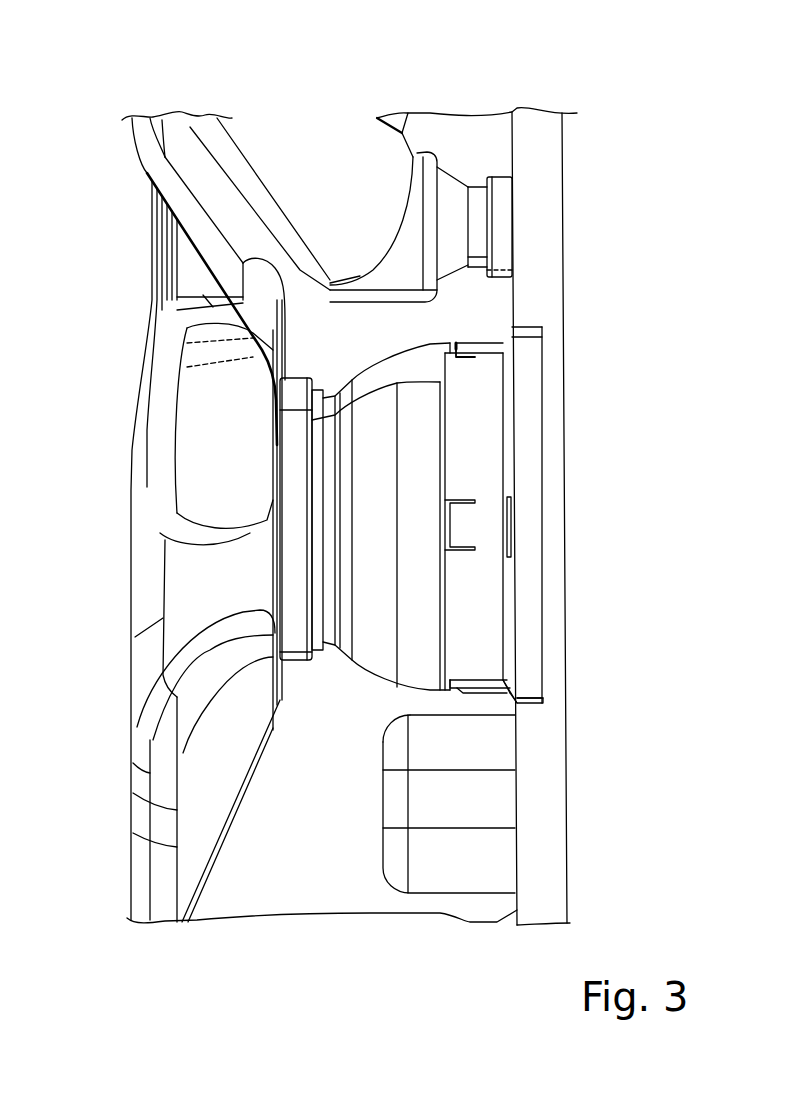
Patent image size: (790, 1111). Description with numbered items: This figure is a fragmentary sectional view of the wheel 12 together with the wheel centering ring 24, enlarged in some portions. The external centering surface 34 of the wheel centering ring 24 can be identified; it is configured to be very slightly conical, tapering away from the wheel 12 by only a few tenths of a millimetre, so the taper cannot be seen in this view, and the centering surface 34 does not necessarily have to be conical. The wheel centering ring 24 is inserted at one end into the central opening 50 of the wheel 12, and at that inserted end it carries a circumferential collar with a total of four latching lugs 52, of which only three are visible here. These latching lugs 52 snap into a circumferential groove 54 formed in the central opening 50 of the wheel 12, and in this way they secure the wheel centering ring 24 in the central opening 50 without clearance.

The wheel 12 is at (459, 106).
The wheel centering ring 24 is at (556, 613).
The centering surface 34 is at (534, 718).
The central opening 50 is at (375, 546).
The latching lugs 52 is at (458, 350).
The circumferential groove 54 is at (457, 343).